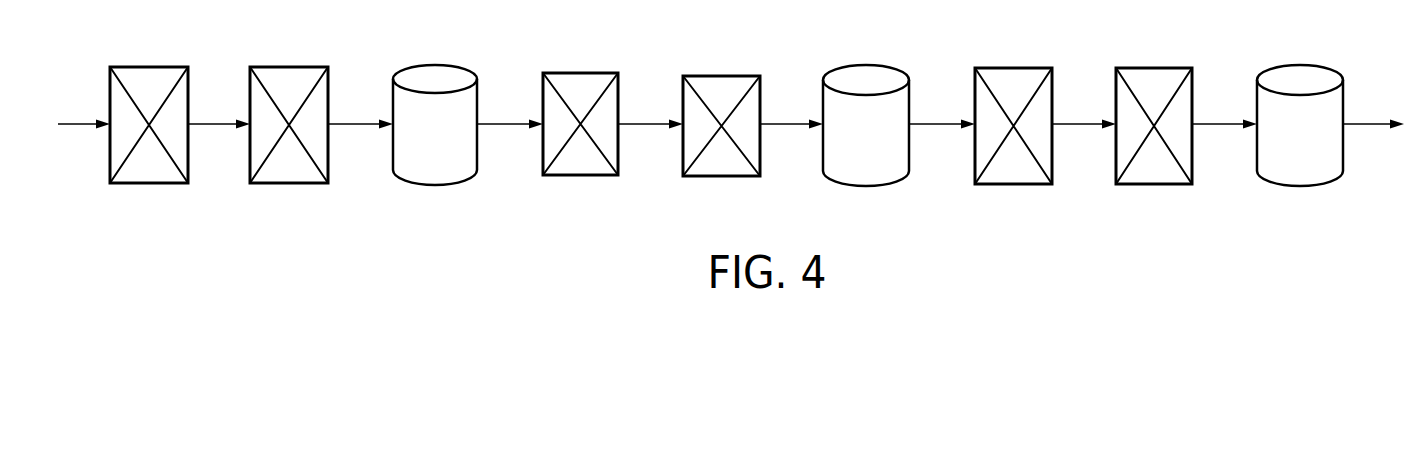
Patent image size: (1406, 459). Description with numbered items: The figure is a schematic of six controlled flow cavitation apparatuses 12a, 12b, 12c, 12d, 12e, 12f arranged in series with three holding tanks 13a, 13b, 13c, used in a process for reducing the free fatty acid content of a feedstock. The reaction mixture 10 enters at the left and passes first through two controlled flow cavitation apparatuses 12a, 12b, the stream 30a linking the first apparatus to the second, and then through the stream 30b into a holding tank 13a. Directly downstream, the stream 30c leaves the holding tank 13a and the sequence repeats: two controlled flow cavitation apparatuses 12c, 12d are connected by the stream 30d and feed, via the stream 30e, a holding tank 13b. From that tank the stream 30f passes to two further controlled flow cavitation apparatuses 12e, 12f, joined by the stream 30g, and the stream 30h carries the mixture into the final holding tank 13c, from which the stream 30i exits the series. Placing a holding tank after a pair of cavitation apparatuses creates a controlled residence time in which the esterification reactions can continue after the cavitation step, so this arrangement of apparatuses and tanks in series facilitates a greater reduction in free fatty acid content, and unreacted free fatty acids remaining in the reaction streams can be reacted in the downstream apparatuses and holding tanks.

The reaction stream 10 is at (83, 118).
The controlled flow cavitation apparatus 12a is at (152, 67).
The controlled flow cavitation apparatus 12b is at (295, 67).
The controlled flow cavitation apparatus 12c is at (588, 73).
The controlled flow cavitation apparatus 12d is at (728, 76).
The controlled flow cavitation apparatus 12e is at (1017, 68).
The controlled flow cavitation apparatus 12f is at (1158, 68).
The holding tank 13a is at (433, 63).
The holding tank 13b is at (865, 65).
The holding tank 13c is at (1298, 65).
The reaction stream 30a is at (230, 120).
The reaction stream 30b is at (370, 120).
The reaction stream 30c is at (522, 120).
The reaction stream 30d is at (662, 120).
The reaction stream 30e is at (802, 120).
The reaction stream 30f is at (955, 122).
The reaction stream 30g is at (1095, 122).
The reaction stream 30h is at (1237, 122).
The reaction stream 30i is at (1385, 122).